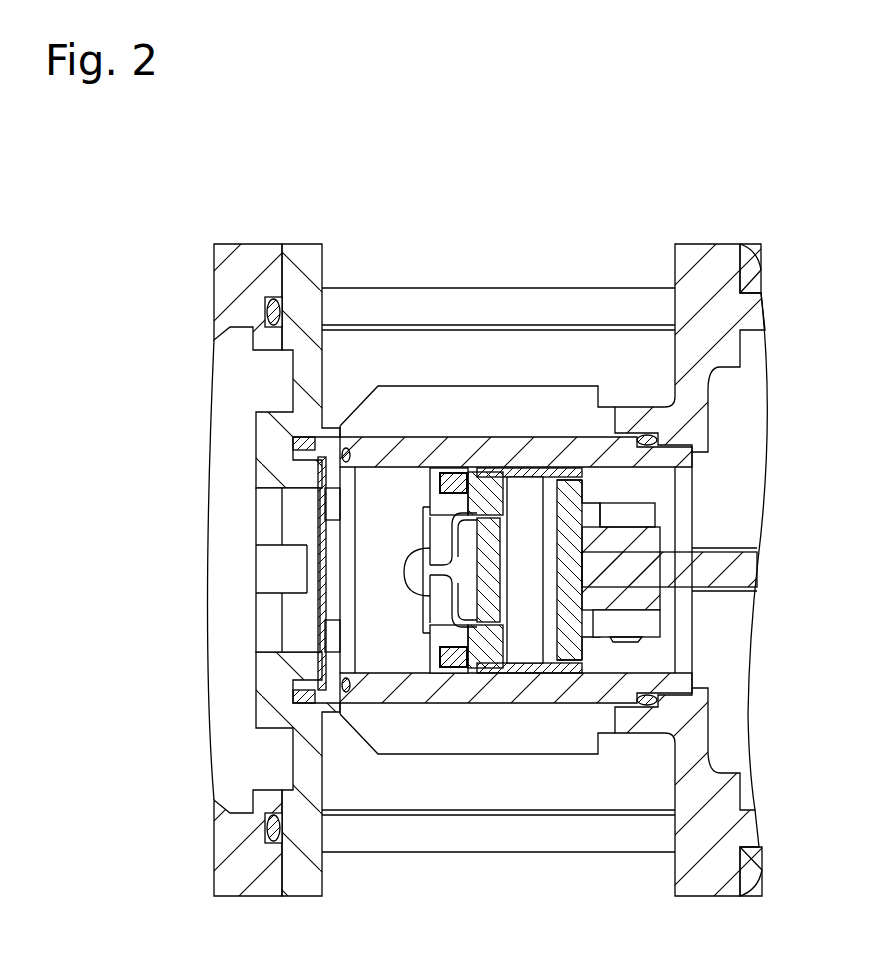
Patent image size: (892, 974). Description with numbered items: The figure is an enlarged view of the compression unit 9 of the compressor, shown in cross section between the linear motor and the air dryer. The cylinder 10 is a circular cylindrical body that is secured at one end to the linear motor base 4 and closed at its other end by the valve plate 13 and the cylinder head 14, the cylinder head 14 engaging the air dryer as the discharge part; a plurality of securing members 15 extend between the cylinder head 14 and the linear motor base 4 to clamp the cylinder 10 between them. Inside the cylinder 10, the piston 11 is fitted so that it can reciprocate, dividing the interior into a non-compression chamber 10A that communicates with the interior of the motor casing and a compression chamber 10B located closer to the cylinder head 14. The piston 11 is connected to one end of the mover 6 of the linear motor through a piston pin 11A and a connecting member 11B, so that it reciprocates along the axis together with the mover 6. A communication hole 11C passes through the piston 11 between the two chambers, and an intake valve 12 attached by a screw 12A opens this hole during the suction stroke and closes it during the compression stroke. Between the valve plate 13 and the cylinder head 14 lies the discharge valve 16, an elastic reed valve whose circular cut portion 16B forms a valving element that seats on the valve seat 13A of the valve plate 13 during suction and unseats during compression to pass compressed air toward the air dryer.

The linear motor base 4 is at (715, 855).
The mover 6 is at (735, 570).
The compression unit 9 is at (456, 238).
The cylinder 10 is at (503, 485).
The non-compression chamber 10A is at (622, 497).
The compression chamber 10B is at (383, 512).
The piston 11 is at (498, 660).
The piston pin 11A is at (525, 550).
The connecting member 11B is at (584, 655).
The communication hole 11C is at (436, 500).
The intake valve 12 is at (435, 592).
The screw 12A is at (418, 590).
The valve plate 13 is at (305, 447).
The valve seat 13A is at (330, 525).
The cylinder head 14 is at (311, 268).
The securing members 15 is at (573, 315).
The discharge valve 16 is at (320, 578).
The cut portion 16B is at (320, 630).